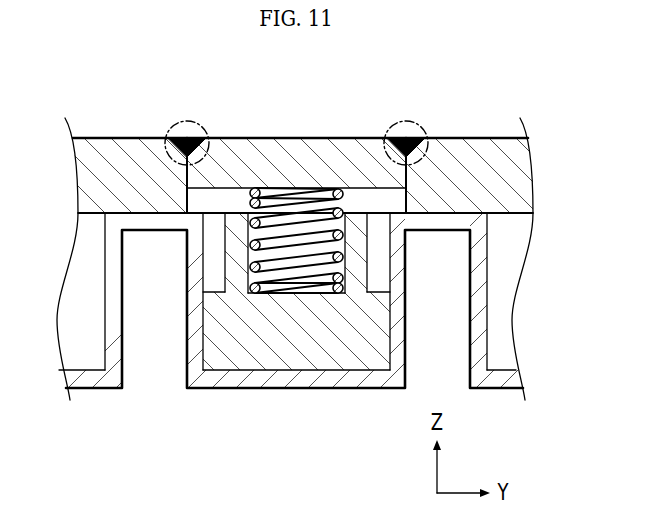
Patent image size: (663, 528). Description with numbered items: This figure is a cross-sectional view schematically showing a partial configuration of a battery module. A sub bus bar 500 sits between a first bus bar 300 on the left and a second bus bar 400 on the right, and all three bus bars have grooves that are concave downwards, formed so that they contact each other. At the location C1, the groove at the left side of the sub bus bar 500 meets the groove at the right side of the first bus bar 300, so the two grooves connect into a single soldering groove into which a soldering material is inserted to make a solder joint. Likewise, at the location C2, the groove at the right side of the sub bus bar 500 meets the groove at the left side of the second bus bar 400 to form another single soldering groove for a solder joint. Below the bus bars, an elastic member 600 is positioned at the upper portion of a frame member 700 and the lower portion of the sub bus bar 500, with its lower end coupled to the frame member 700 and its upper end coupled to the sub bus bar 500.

The first bus bar 300 is at (118, 138).
The second bus bar 400 is at (473, 138).
The sub bus bar 500 is at (337, 138).
The elastic member 600 is at (292, 284).
The frame member 700 is at (351, 390).
The soldering groove between sub bus bar and first bus bar C1 is at (186, 120).
The soldering groove between sub bus bar and second bus bar C2 is at (405, 120).